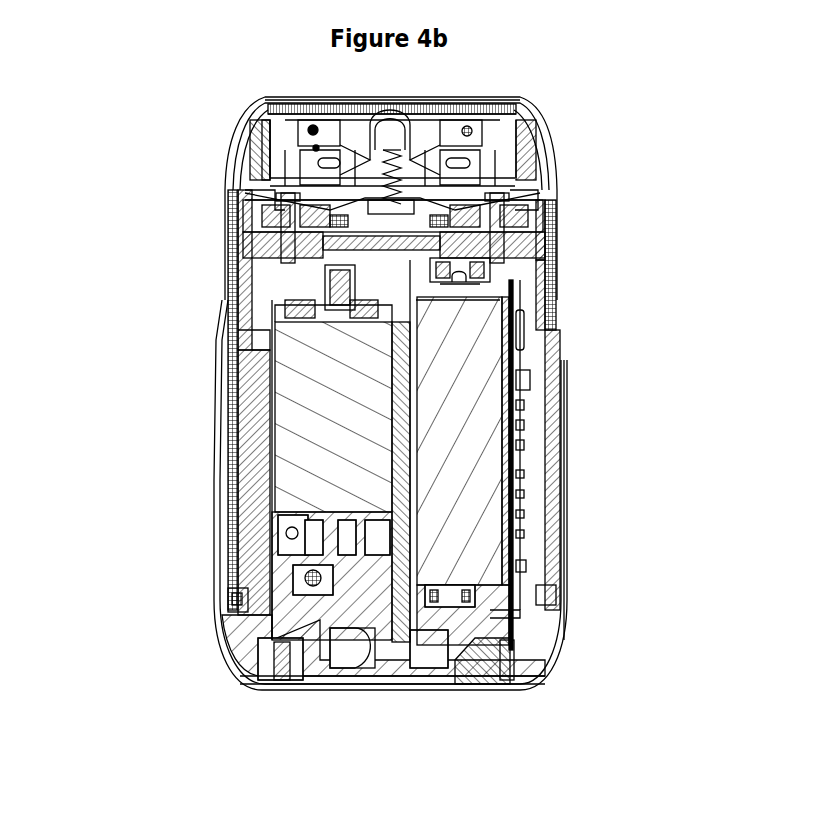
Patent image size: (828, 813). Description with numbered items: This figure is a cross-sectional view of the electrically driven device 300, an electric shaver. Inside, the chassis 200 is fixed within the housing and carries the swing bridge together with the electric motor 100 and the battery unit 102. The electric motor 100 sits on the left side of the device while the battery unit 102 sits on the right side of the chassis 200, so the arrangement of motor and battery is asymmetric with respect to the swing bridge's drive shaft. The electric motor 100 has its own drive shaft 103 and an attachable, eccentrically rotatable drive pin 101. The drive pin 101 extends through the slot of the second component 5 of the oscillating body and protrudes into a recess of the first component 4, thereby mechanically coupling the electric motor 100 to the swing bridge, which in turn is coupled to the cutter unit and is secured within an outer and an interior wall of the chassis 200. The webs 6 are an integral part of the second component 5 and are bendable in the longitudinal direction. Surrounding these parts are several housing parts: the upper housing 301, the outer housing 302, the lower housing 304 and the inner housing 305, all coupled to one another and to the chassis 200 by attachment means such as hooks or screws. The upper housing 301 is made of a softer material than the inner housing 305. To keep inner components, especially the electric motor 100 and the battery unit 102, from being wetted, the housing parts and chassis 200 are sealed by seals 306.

The electrically driven device 300 is at (158, 131).
The drive pin 101 is at (320, 272).
The drive shaft (electric motor) 103 is at (497, 91).
The seal 306 is at (553, 226).
The first component 4 is at (546, 250).
The second component 5 is at (546, 277).
The web 6 is at (408, 303).
The upper housing 301 is at (230, 325).
The outer housing 302 is at (225, 530).
The inner housing 305 is at (225, 578).
The lower housing 304 is at (250, 652).
The electric motor 100 is at (310, 432).
The battery unit 102 is at (465, 490).
The chassis 200 is at (497, 605).